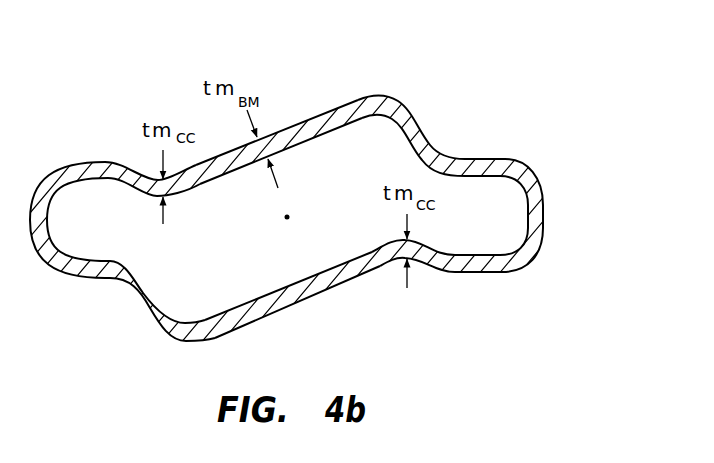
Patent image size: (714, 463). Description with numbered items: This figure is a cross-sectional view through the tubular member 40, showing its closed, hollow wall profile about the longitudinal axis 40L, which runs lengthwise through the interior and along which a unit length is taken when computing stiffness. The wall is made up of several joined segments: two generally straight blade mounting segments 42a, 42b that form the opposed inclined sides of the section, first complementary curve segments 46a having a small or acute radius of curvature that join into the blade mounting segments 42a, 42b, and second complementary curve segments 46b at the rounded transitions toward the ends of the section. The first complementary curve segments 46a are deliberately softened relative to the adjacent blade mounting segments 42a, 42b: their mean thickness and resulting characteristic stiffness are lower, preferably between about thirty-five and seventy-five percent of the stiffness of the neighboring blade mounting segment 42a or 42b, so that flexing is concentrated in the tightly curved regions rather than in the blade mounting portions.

The tubular member 40 is at (505, 137).
The longitudinal axis 40L is at (287, 220).
The blade mounting segment 42a is at (268, 131).
The blade mounting segment 42b is at (311, 304).
The first complementary curve segment 46a is at (150, 178).
The second complementary curve segment 46b is at (416, 127).